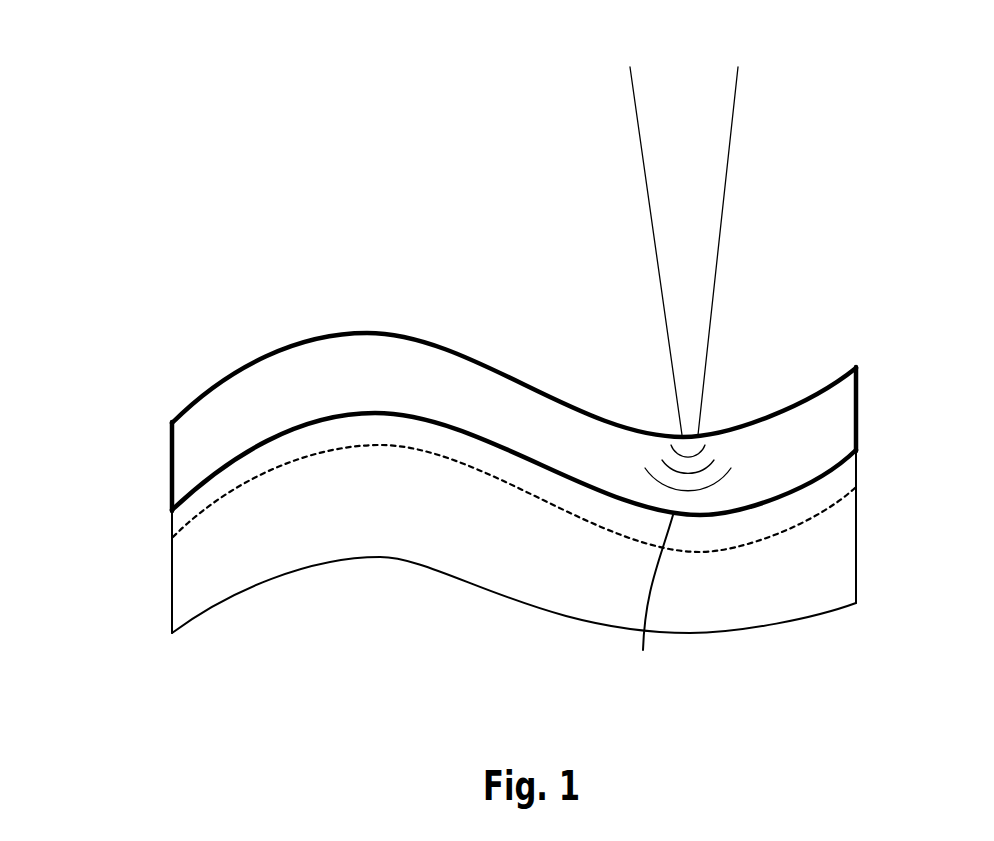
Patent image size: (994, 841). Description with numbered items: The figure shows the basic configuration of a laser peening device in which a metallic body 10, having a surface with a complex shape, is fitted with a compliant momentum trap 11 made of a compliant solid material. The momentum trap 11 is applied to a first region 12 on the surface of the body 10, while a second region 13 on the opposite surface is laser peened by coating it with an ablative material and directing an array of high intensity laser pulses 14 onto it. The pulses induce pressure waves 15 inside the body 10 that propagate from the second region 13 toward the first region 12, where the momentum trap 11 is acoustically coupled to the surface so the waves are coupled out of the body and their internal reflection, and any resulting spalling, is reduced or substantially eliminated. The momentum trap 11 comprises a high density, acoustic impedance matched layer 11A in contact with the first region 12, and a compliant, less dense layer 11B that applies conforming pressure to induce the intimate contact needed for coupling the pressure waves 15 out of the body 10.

The metallic body 10 is at (190, 453).
The compliant momentum trap 11 is at (502, 600).
The high density, acoustic impedance matched layer 11A is at (190, 502).
The compliant, less dense layer 11B is at (202, 567).
The first region 12 is at (643, 650).
The second region 13 is at (642, 432).
The high intensity laser pulses 14 is at (698, 270).
The pressure waves 15 is at (707, 468).